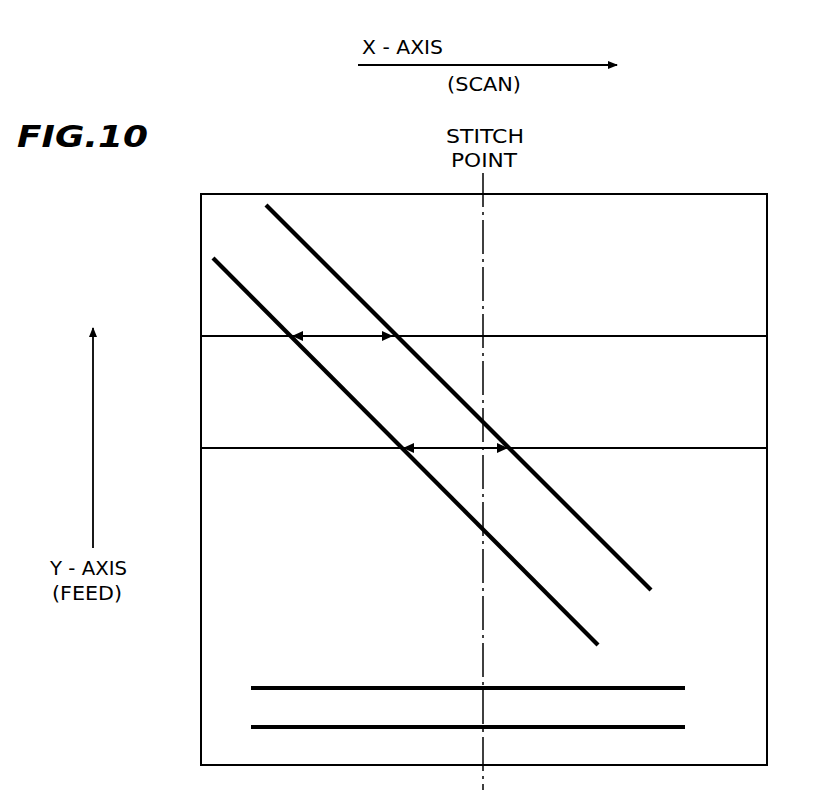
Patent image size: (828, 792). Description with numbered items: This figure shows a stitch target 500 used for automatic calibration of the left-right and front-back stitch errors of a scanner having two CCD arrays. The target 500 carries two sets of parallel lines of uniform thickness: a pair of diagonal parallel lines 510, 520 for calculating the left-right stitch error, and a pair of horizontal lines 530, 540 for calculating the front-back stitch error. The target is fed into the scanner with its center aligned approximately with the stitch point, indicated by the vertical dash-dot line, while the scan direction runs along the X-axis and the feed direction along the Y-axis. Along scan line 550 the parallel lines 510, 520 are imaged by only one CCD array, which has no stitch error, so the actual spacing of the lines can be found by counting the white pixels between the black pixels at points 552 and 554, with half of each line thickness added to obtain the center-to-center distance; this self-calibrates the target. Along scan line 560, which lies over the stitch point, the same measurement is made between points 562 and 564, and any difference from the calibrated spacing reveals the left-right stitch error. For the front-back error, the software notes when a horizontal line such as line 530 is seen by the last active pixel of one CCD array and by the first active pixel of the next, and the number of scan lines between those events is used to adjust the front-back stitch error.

The stitch target 500 is at (273, 193).
The parallel line 510 is at (318, 259).
The parallel line 520 is at (259, 302).
The horizontal line 530 is at (301, 686).
The horizontal line 540 is at (296, 725).
The scan line 550 is at (650, 336).
The scan line 560 is at (648, 448).
The point 552 is at (292, 340).
The point 554 is at (394, 334).
The point 562 is at (402, 452).
The point 564 is at (509, 446).